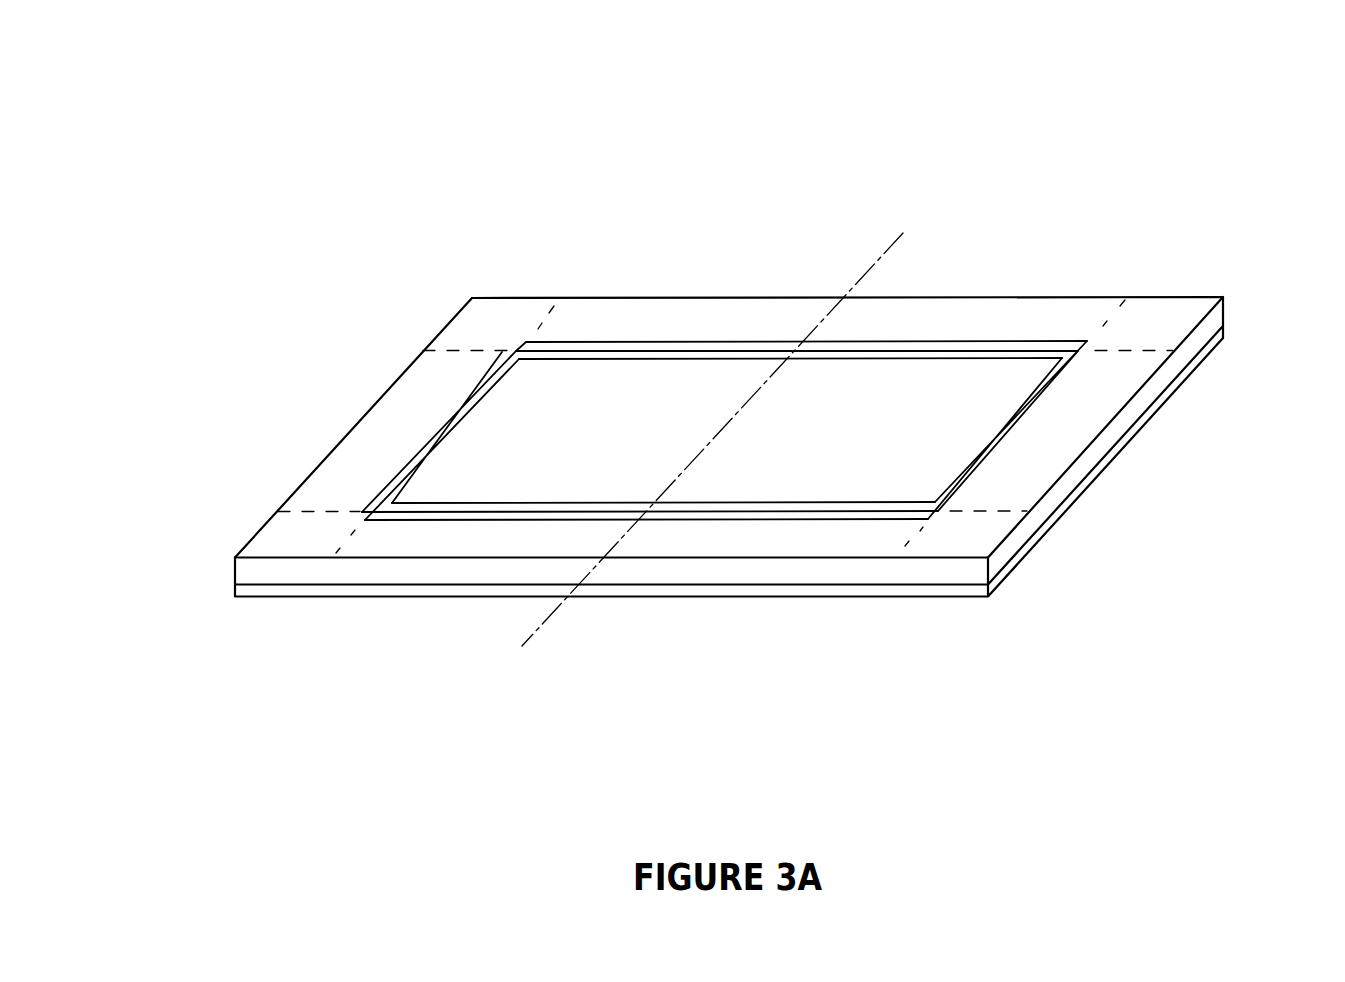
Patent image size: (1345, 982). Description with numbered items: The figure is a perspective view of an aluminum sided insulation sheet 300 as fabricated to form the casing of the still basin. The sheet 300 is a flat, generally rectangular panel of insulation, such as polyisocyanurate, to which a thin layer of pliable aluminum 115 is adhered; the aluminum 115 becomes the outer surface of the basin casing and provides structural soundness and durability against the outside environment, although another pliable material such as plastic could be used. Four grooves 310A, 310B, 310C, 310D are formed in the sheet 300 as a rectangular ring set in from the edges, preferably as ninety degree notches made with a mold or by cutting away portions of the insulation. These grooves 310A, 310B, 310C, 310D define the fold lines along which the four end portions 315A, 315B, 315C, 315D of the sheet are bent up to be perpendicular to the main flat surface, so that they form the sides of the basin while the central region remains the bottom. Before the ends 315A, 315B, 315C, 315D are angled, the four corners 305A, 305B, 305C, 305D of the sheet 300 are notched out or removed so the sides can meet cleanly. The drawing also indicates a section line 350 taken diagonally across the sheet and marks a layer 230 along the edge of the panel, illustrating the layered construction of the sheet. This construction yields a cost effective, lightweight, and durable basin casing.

The aluminum sided insulation sheet 300 is at (715, 318).
The corner of the sheet 305A is at (1182, 313).
The corner of the sheet 305B is at (502, 317).
The corner of the sheet 305C is at (278, 529).
The corner of the sheet 305D is at (970, 538).
The groove 310A is at (670, 352).
The groove 310B is at (455, 418).
The groove 310C is at (440, 512).
The groove 310D is at (1053, 385).
The end portion of the sheet 315A is at (1025, 313).
The end portion of the sheet 315B is at (427, 368).
The end portion of the sheet 315C is at (697, 535).
The end portion of the sheet 315D is at (1063, 440).
The section line 350 is at (903, 233).
The substrate layer 230 is at (1180, 363).
The thin layer of pliable aluminum 115 is at (1083, 488).